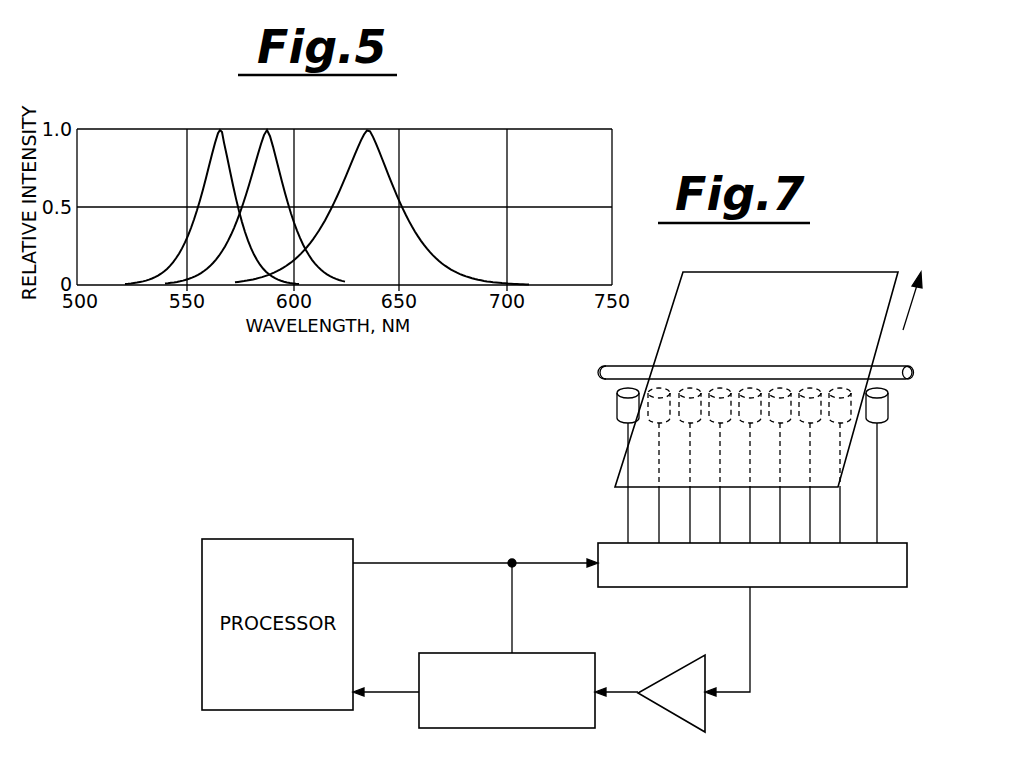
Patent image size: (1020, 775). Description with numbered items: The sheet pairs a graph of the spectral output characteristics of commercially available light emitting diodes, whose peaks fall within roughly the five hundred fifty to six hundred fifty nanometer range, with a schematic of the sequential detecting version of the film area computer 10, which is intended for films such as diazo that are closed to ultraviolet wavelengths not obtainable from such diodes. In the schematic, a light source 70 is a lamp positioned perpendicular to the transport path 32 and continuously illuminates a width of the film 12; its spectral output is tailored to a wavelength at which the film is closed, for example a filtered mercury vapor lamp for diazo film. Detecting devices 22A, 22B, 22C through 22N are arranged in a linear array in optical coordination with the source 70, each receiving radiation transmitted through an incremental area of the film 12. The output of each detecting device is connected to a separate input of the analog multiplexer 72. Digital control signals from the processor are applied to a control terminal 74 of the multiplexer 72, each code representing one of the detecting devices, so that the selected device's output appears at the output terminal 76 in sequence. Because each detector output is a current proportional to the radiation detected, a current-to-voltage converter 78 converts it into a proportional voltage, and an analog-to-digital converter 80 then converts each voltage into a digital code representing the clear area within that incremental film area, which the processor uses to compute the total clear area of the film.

The film area computer 10 is at (552, 428).
The film 12 is at (848, 272).
The detecting device 22A is at (628, 533).
The detecting device 22B is at (659, 527).
The detecting device 22C is at (690, 523).
The detecting device 22N is at (878, 535).
The transport path 32 is at (908, 312).
The light source 70 is at (625, 367).
The analog multiplexer 72 is at (893, 543).
The control terminal 74 is at (567, 560).
The output terminal 76 is at (752, 590).
The current-to-voltage converter 78 is at (706, 710).
The analog-to-digital converter 80 is at (563, 652).